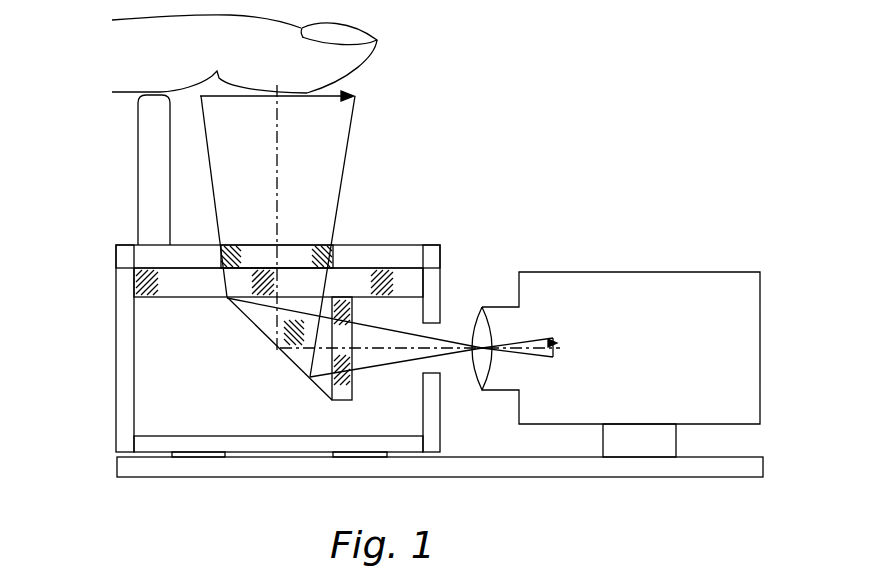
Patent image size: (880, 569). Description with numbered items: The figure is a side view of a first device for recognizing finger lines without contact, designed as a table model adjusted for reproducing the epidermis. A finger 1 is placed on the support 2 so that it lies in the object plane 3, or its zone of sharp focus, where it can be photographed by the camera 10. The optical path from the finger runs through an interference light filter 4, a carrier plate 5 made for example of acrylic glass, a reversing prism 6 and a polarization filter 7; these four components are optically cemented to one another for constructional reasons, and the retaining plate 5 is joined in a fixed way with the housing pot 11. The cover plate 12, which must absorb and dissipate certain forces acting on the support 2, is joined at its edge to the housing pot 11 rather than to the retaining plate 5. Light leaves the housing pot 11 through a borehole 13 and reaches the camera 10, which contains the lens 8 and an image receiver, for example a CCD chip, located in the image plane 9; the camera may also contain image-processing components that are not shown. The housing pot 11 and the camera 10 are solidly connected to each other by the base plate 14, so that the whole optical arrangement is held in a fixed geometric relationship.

The finger 1 is at (362, 60).
The support 2 is at (148, 162).
The object plane 3 is at (353, 96).
The interference light filter 4 is at (298, 248).
The carrier plate 5 is at (163, 292).
The reversing prism 6 is at (262, 328).
The polarization filter 7 is at (352, 385).
The lens 8 is at (482, 307).
The image plane 9 is at (556, 344).
The camera 10 is at (620, 272).
The housing pot 11 is at (117, 356).
The cover plate 12 is at (387, 255).
The borehole 13 is at (435, 371).
The base plate 14 is at (117, 463).